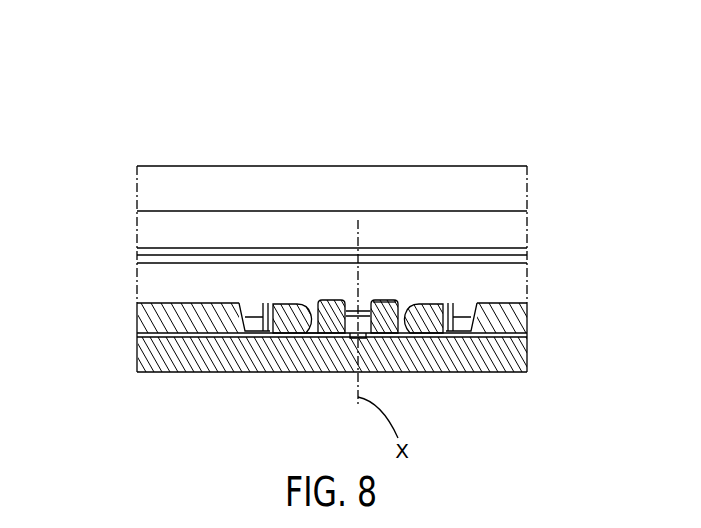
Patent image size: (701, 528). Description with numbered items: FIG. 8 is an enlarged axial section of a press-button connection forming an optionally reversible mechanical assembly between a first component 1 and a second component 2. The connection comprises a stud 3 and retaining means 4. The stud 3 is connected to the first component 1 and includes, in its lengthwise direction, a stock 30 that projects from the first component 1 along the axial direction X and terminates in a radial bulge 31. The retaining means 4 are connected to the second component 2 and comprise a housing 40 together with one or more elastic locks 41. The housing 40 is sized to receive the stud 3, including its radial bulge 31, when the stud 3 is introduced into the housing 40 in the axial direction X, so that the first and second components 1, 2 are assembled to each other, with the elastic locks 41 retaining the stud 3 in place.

The first component 1 is at (152, 354).
The second component 2 is at (150, 323).
The stud 3 is at (344, 298).
The stock 30 is at (373, 315).
The radial bulge 31 is at (396, 303).
The retaining means 4 is at (294, 298).
The housing 40 is at (315, 322).
The elastic locks 41 is at (270, 298).